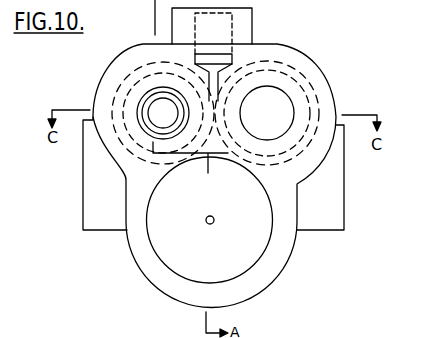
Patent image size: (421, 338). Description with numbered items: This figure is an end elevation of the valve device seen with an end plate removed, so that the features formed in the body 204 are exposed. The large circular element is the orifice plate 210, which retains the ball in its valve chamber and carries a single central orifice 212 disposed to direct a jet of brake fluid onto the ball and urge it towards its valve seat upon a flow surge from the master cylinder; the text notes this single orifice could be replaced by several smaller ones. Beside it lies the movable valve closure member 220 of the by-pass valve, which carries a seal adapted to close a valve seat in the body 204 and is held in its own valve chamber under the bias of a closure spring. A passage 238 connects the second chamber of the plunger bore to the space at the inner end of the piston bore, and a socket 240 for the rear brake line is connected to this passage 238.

The body 204 is at (293, 257).
The orifice plate 210 is at (238, 263).
The central orifice 212 is at (205, 222).
The valve closure member 220 is at (163, 113).
The passage 238 is at (213, 112).
The socket 240 is at (234, 30).